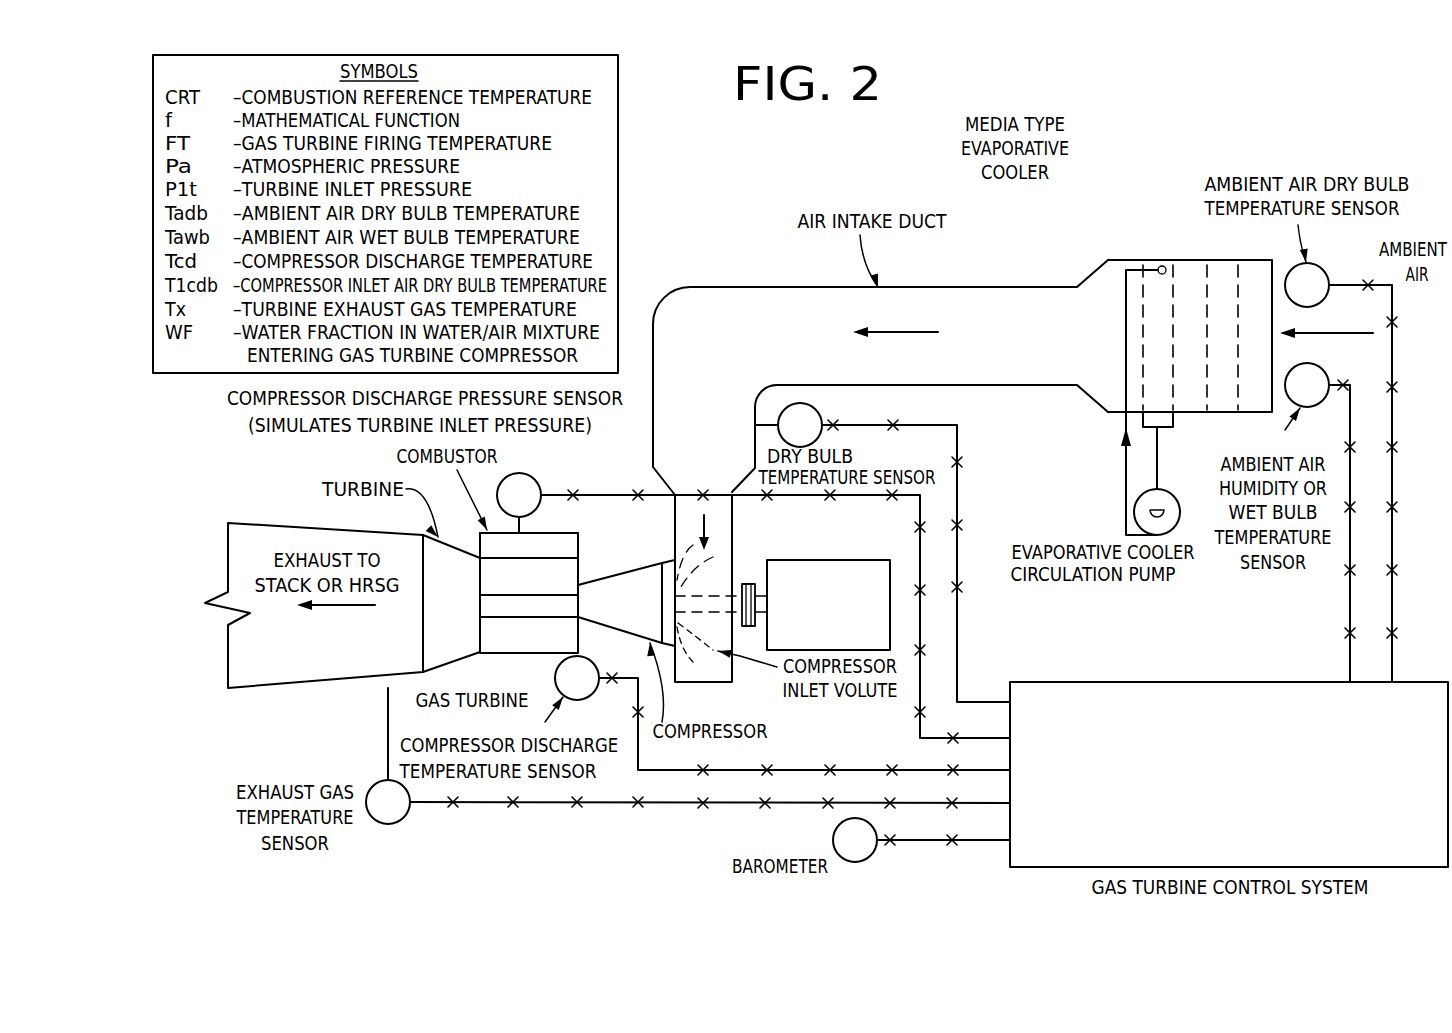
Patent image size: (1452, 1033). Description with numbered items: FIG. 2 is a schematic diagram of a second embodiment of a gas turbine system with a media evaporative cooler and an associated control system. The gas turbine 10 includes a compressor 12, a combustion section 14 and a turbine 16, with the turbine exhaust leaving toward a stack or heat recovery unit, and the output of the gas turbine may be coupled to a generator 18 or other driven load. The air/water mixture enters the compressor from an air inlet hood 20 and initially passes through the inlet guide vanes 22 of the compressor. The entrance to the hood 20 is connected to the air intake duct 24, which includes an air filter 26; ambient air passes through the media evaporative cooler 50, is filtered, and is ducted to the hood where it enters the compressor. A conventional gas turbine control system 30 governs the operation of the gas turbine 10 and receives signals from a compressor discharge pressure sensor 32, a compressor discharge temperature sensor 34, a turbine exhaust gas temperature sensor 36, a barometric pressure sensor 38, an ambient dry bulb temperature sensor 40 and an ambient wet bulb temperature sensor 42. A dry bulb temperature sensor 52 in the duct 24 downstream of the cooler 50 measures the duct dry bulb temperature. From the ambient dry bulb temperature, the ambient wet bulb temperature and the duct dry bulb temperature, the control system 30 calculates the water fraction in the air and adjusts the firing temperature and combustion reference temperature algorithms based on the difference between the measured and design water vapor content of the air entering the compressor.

The gas turbine 10 is at (509, 646).
The compressor 12 is at (611, 613).
The combustion section 14 is at (514, 556).
The turbine 16 is at (436, 616).
The generator 18 is at (812, 560).
The air inlet hood 20 is at (732, 682).
The inlet guide vanes 22 is at (673, 560).
The air intake duct 24 is at (684, 396).
The air filter 26 is at (1203, 293).
The gas turbine control system 30 is at (1203, 851).
The compressor discharge pressure sensor 32 is at (548, 474).
The compressor discharge temperature sensor 34 is at (580, 700).
The turbine exhaust gas temperature sensor 36 is at (368, 790).
The barometric pressure sensor 38 is at (833, 838).
The dry bulb temperature sensor 40 is at (1322, 265).
The wet bulb temperature sensor 42 is at (1325, 406).
The media evaporative cooler 50 is at (1157, 373).
The dry bulb temperature sensor 52 is at (812, 408).